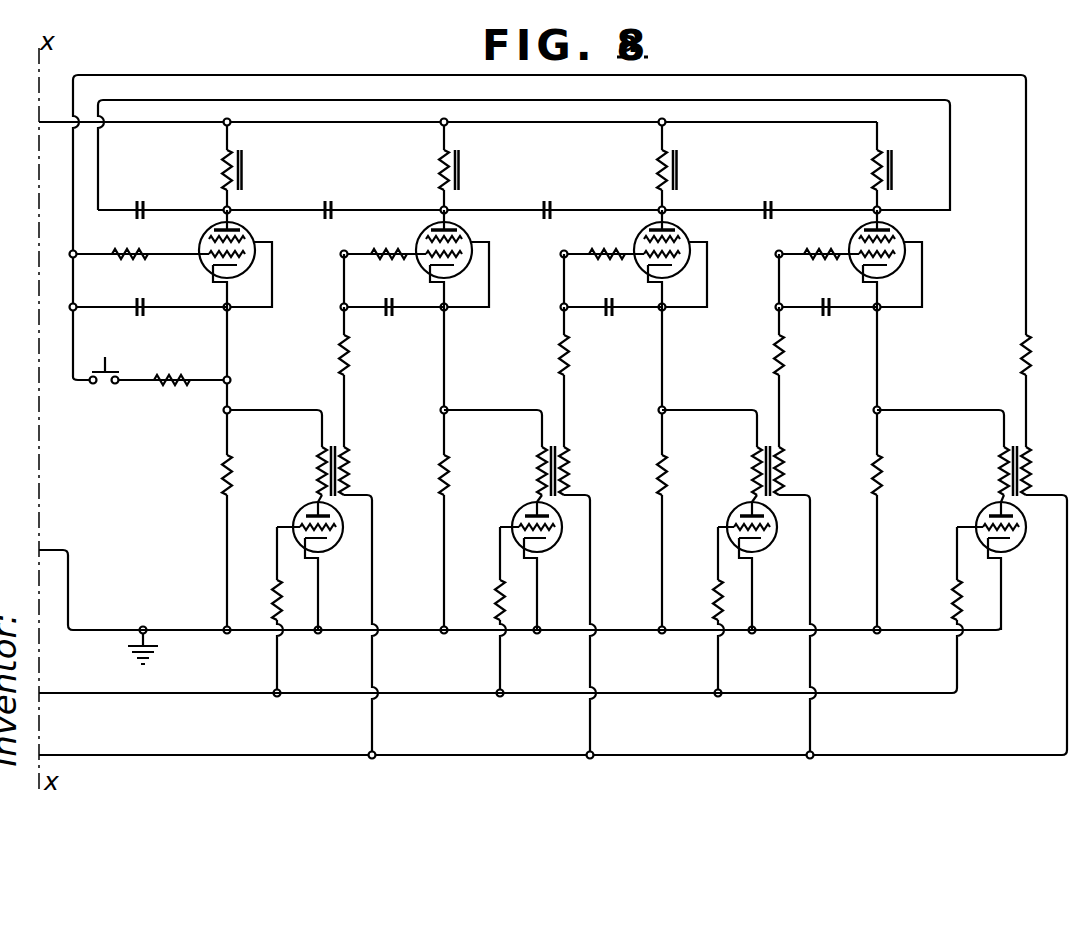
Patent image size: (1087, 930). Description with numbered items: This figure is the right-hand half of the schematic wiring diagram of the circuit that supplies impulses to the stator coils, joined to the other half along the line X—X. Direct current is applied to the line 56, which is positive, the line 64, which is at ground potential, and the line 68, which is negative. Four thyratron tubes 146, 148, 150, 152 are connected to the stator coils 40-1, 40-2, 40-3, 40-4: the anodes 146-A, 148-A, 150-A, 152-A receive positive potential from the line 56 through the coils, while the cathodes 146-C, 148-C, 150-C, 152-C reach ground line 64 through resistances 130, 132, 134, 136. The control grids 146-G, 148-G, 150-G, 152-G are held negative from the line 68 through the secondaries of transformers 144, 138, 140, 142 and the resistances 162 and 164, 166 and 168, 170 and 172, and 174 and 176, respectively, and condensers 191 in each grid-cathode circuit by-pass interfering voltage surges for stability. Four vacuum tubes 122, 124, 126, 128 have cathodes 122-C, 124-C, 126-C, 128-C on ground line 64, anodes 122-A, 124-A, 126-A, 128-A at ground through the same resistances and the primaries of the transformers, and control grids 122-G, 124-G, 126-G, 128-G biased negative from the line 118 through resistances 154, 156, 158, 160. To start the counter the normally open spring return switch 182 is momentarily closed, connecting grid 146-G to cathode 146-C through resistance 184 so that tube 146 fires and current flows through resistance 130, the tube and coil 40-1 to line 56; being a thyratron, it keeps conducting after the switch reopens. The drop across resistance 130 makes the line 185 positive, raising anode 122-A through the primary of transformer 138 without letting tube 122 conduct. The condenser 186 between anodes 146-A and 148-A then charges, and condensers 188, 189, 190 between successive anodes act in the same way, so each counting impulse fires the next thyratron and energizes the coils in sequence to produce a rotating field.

The line 68 is at (256, 75).
The line 56 is at (44, 122).
The stator coil 40-1 is at (243, 170).
The stator coil 40-2 is at (460, 170).
The stator coil 40-3 is at (678, 170).
The stator coil 40-4 is at (893, 170).
The condenser 190 is at (143, 206).
The condenser 186 is at (334, 206).
The condenser 188 is at (550, 206).
The condenser 189 is at (773, 206).
The resistance 164 is at (137, 252).
The resistance 168 is at (393, 244).
The resistance 172 is at (612, 244).
The resistance 176 is at (826, 244).
The thyratron tube 146 is at (256, 256).
The anode 146-A is at (245, 230).
The control grid 146-G is at (213, 258).
The cathode 146-C is at (250, 268).
The thyratron tube 148 is at (473, 256).
The anode 148-A is at (462, 230).
The control grid 148-G is at (430, 258).
The cathode 148-C is at (467, 268).
The thyratron tube 150 is at (691, 256).
The anode 150-A is at (680, 230).
The control grid 150-G is at (648, 258).
The cathode 150-C is at (685, 268).
The thyratron tube 152 is at (906, 256).
The anode 152-A is at (895, 230).
The control grid 152-G is at (863, 258).
The cathode 152-C is at (900, 268).
The condensers 191 is at (137, 302).
The resistance 166 is at (341, 350).
The resistance 170 is at (561, 350).
The resistance 174 is at (776, 350).
The resistance 162 is at (1023, 350).
The spring return switch 182 is at (100, 384).
The resistance 184 is at (176, 384).
The line 185 is at (263, 410).
The transformer 138 is at (348, 448).
The transformer 140 is at (568, 448).
The transformer 142 is at (783, 448).
The transformer 144 is at (1031, 468).
The resistance 130 is at (220, 473).
The resistance 132 is at (450, 473).
The resistance 134 is at (668, 473).
The resistance 136 is at (883, 473).
The vacuum tube 122 is at (334, 520).
The anode 122-A is at (298, 512).
The control grid 122-G is at (340, 528).
The cathode 122-C is at (328, 540).
The vacuum tube 124 is at (553, 520).
The anode 124-A is at (521, 512).
The control grid 124-G is at (559, 528).
The cathode 124-C is at (547, 540).
The vacuum tube 126 is at (768, 520).
The anode 126-A is at (737, 512).
The control grid 126-G is at (774, 528).
The cathode 126-C is at (762, 540).
The vacuum tube 128 is at (980, 529).
The anode 128-A is at (986, 514).
The control grid 128-G is at (983, 539).
The cathode 128-C is at (1003, 547).
The resistance 154 is at (272, 598).
The resistance 156 is at (493, 615).
The resistance 158 is at (711, 615).
The resistance 160 is at (950, 615).
The line 64 is at (60, 549).
The line 118 is at (50, 692).